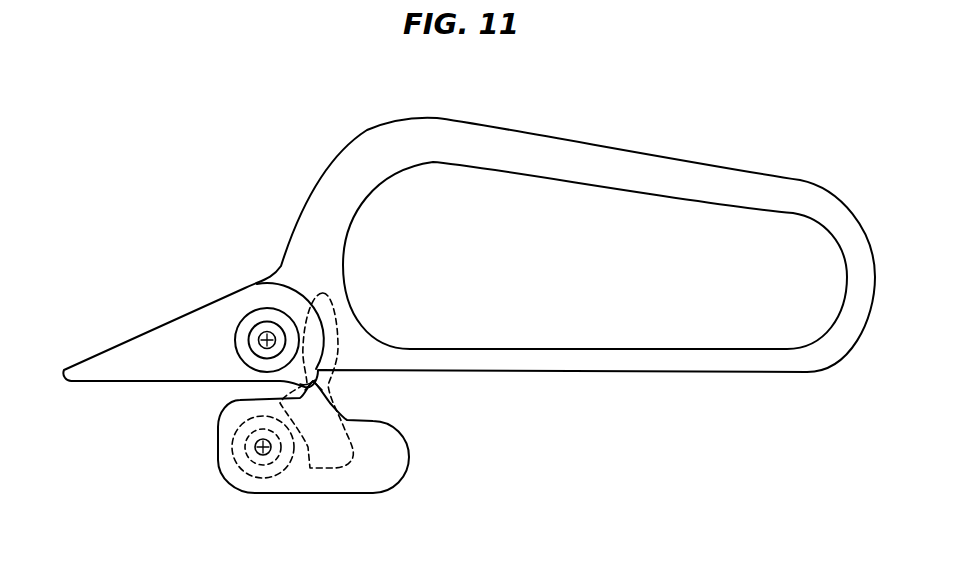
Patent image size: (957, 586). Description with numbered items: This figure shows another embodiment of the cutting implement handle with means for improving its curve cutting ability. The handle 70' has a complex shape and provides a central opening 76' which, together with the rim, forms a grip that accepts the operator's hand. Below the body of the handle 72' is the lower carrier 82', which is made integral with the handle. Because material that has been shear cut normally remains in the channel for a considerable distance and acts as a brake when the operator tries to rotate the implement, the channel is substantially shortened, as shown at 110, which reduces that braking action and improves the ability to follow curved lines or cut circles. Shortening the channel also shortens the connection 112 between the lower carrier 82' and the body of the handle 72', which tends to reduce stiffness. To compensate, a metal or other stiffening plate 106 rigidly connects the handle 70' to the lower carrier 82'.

The handle 70' is at (469, 227).
The body of the handle 72' is at (279, 226).
The central opening 76' is at (595, 255).
The lower carrier 82' is at (307, 465).
The stiffening plate 106 is at (337, 470).
The shortened channel 110 is at (322, 376).
The connection 112 is at (305, 386).